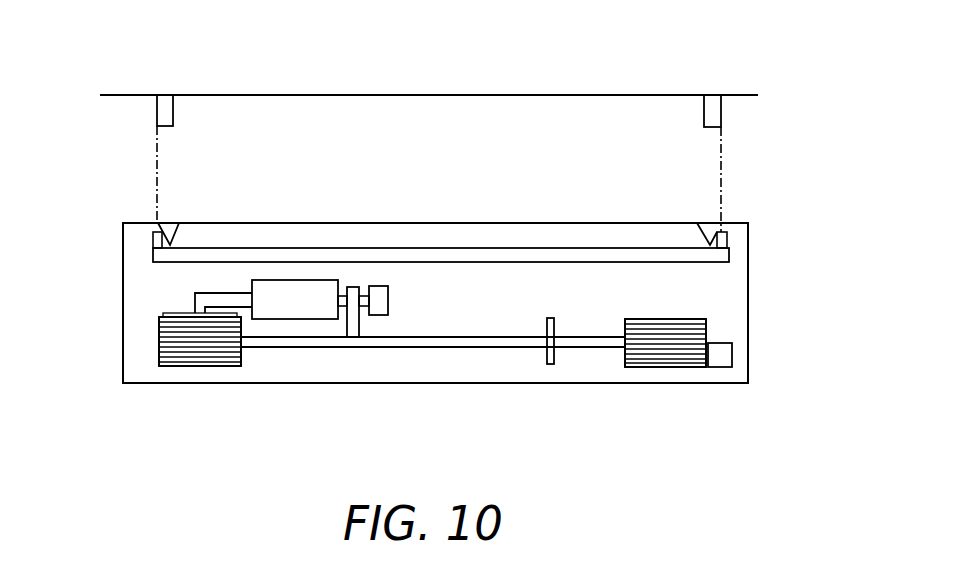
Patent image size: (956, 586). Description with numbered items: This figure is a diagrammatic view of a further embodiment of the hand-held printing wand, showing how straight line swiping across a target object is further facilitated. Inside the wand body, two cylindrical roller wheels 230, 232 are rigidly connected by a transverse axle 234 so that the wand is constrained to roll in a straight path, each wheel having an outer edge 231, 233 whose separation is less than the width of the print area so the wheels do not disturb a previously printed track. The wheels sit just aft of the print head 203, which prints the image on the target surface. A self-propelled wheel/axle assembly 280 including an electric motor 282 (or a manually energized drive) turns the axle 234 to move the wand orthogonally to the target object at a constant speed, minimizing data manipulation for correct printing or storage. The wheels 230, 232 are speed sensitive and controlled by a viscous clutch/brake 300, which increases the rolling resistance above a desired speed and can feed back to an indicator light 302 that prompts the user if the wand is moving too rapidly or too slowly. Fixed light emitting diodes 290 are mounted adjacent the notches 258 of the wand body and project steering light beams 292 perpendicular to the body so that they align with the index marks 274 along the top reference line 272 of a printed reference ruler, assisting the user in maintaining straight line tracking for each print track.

The print head 203 is at (410, 245).
The cylindrical roller wheel 230 is at (200, 367).
The outer edge of wheel 231 is at (240, 337).
The cylindrical roller wheel 232 is at (666, 368).
The outer edge of wheel 233 is at (706, 318).
The transverse axle 234 is at (495, 336).
The notches 258 is at (171, 238).
The top reference line 272 is at (433, 93).
The index marks 274 is at (157, 95).
The self-propelled wheel/axle assembly 280 is at (346, 334).
The electric motor 282 is at (282, 320).
The light emitting diodes 290 is at (153, 240).
The steering light beams 292 is at (156, 164).
The viscous clutch/brake 300 is at (180, 291).
The indicator light 302 is at (733, 354).